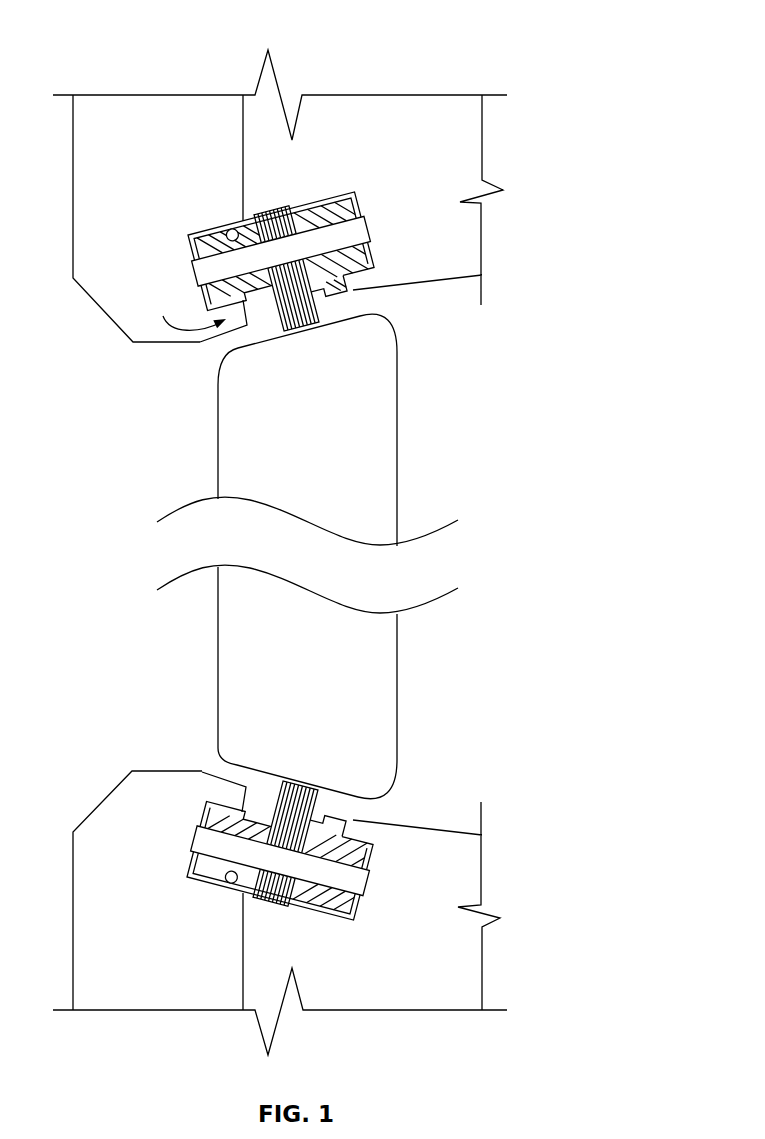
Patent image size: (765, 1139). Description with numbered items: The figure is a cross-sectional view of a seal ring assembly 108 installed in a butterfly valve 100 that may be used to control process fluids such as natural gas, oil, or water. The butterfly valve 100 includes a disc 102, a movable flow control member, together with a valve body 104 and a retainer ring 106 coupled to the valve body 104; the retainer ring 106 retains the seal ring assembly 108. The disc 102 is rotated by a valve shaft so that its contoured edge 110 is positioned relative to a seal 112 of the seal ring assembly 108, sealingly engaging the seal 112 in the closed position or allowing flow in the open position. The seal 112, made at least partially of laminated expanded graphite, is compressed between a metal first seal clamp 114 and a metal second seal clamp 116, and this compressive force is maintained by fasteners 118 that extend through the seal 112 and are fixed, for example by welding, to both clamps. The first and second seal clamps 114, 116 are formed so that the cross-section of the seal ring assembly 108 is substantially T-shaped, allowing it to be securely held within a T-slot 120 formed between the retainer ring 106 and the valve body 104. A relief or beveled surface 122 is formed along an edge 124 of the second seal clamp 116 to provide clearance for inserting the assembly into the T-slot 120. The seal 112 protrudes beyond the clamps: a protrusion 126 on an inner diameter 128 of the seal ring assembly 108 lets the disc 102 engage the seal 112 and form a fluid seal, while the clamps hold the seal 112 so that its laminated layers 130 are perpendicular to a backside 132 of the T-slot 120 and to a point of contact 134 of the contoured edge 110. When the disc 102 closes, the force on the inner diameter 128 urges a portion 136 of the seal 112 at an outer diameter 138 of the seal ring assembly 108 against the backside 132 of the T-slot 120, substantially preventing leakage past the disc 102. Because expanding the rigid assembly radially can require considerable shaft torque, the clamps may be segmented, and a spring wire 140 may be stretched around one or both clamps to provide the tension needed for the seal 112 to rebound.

The butterfly valve 100 is at (300, 528).
The disc 102 is at (388, 447).
The valve body 104 is at (408, 272).
The retainer ring 106 is at (122, 320).
The seal ring assembly 108 is at (215, 228).
The contoured edge 110 is at (262, 330).
The seal 112 is at (290, 327).
The first seal clamp 114 is at (197, 240).
The second seal clamp 116 is at (328, 840).
The fasteners 118 is at (205, 268).
The T-slot 120 is at (184, 309).
The beveled surface 122 is at (323, 895).
The edge 124 is at (345, 888).
The protrusion 126 is at (322, 322).
The inner diameter 128 is at (312, 325).
The laminated layers 130 is at (332, 298).
The backside 132 is at (345, 197).
The point of contact 134 is at (288, 785).
The portion of the seal 136 is at (270, 213).
The outer diameter 138 is at (267, 897).
The spring wire 140 is at (230, 231).